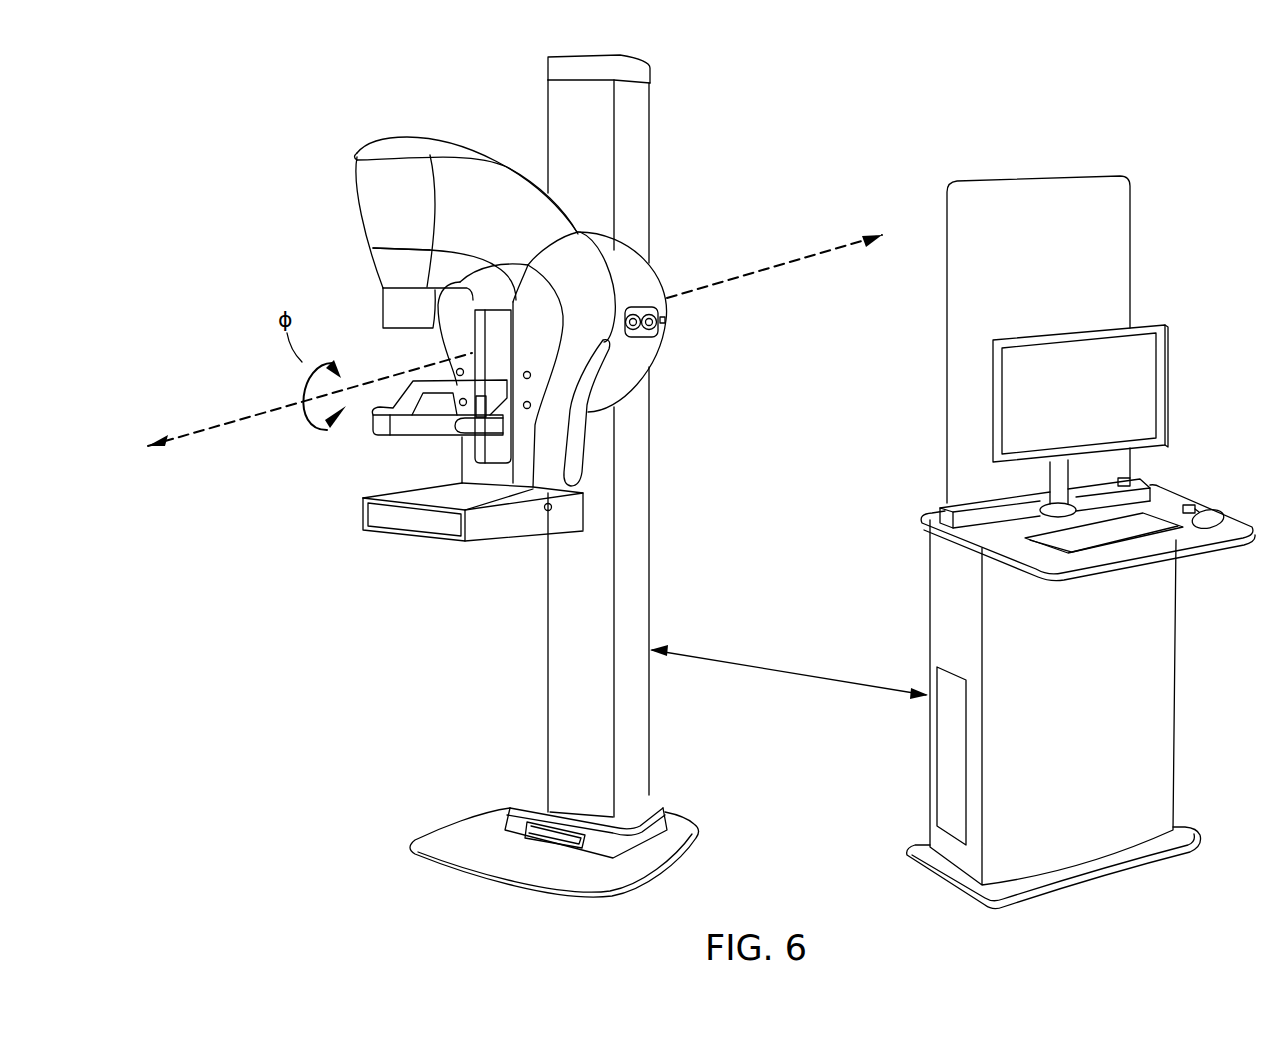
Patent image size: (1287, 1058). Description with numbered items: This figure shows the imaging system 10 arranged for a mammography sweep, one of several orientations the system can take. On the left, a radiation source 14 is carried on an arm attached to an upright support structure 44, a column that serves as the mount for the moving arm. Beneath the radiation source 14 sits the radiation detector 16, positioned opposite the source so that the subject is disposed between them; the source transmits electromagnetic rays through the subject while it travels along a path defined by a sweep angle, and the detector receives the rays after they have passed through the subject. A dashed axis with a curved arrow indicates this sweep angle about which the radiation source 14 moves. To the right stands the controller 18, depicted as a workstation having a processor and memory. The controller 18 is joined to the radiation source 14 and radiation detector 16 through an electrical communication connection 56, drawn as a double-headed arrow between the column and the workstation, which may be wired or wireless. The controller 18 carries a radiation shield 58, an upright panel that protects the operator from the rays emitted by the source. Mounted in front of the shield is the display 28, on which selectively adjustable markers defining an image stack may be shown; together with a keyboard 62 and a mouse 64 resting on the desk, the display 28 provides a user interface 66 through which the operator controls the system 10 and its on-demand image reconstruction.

The system 10 is at (405, 93).
The radiation source 14 is at (383, 264).
The radiation detector 16 is at (372, 516).
The support structure 44 is at (638, 186).
The electrical communication connection 56 is at (782, 668).
The controller 18 is at (1075, 147).
The radiation shield 58 is at (1120, 261).
The display 28 is at (1168, 357).
The user interface 66 is at (1147, 419).
The keyboard 62 is at (1150, 539).
The mouse 64 is at (1213, 512).